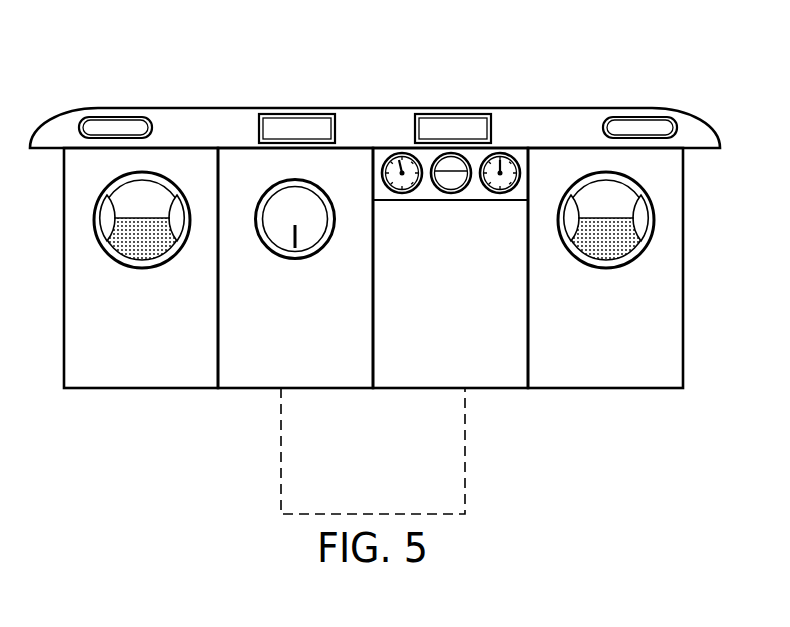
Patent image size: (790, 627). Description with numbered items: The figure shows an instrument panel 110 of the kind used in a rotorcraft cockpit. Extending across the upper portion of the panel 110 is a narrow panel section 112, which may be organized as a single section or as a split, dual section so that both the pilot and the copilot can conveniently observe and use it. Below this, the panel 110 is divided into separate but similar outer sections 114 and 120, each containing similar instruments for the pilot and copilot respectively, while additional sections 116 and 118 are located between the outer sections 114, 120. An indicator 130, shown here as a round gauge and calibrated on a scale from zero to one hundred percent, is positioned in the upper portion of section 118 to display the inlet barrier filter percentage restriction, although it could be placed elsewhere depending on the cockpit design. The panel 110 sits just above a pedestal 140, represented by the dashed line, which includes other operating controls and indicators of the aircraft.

The instrument panel 110 is at (183, 72).
The narrow panel section 112 is at (562, 107).
The outer panel section 114 is at (140, 380).
The additional panel section 116 is at (250, 380).
The additional panel section 118 is at (500, 380).
The outer panel section 120 is at (607, 380).
The indicator 130 is at (419, 187).
The pedestal 140 is at (281, 473).